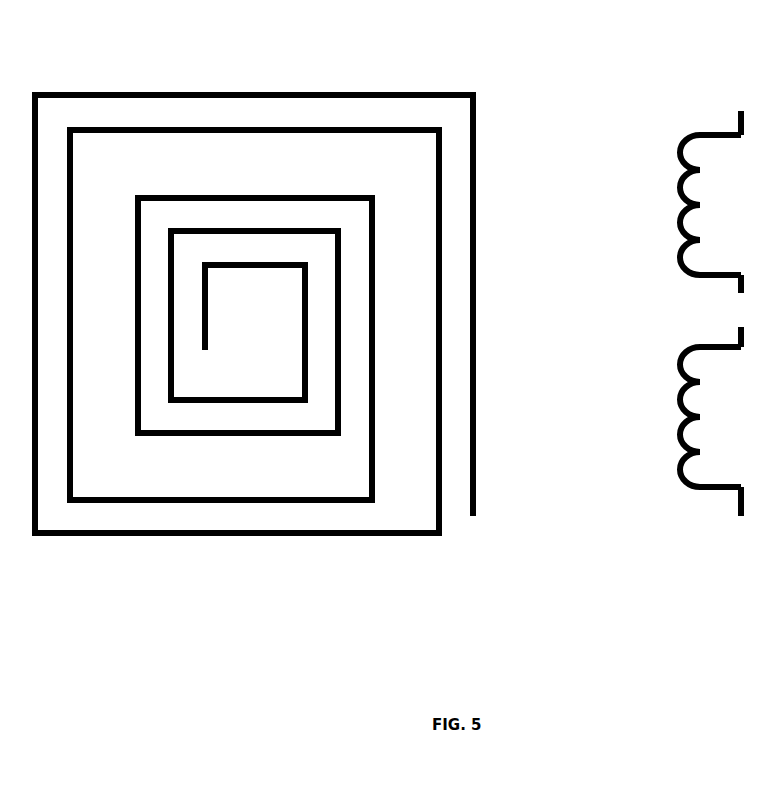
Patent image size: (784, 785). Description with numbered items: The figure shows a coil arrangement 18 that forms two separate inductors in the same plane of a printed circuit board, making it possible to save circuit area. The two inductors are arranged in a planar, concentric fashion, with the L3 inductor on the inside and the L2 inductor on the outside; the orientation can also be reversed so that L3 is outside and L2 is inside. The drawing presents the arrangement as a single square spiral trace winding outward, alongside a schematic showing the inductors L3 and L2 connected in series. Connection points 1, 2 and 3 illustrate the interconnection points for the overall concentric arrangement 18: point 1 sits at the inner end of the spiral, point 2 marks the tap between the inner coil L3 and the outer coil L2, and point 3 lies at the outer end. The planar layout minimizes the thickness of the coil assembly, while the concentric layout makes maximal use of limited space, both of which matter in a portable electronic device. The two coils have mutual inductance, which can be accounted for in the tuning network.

The coil arrangement 18 is at (96, 91).
The connection point 1 is at (473, 228).
The connection point 2 is at (556, 379).
The connection point 3 is at (606, 518).
The L3 inductor L3 is at (683, 205).
The L2 inductor L2 is at (683, 417).